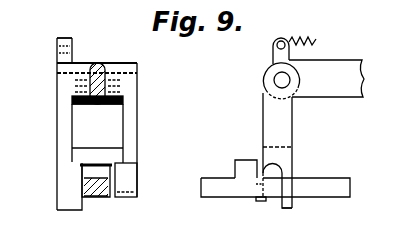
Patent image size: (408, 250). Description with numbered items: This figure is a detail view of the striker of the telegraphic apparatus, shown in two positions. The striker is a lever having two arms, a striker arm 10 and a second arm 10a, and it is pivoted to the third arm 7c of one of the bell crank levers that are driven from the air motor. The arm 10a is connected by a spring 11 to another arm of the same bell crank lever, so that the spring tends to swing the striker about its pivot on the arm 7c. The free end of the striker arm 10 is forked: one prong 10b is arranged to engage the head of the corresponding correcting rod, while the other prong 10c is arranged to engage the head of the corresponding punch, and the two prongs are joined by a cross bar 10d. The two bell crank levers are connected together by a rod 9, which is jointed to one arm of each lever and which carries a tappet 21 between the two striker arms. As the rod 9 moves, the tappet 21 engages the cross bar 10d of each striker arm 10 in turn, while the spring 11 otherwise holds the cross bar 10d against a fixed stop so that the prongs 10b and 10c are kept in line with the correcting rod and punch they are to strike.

The striker arm 10 is at (139, 108).
The striker arm 10a is at (274, 52).
The prong 10b is at (320, 207).
The prong 10c is at (132, 172).
The cross bar 10d is at (306, 152).
The third arm of bell crank lever 7c is at (107, 63).
The rod 9 is at (97, 197).
The spring 11 is at (316, 39).
The tappet 21 is at (94, 173).